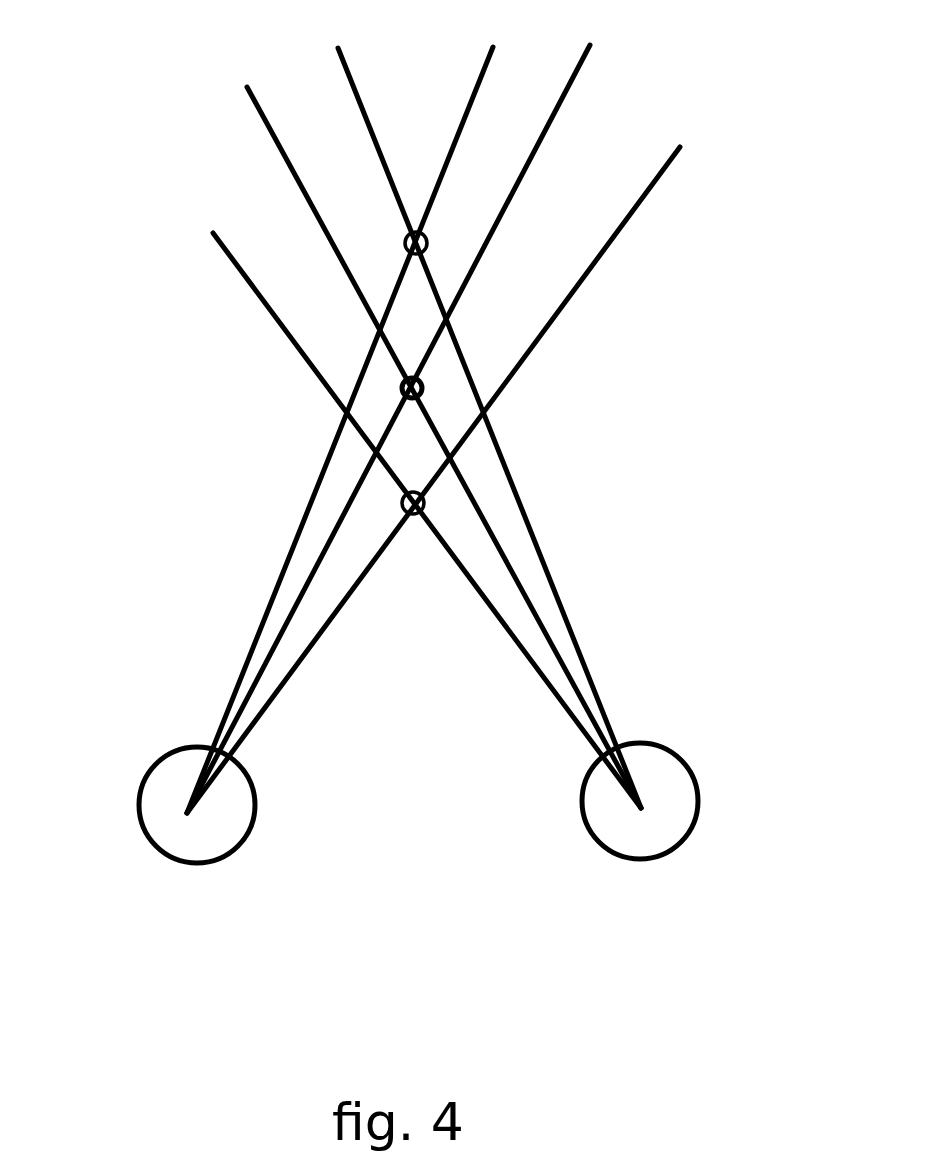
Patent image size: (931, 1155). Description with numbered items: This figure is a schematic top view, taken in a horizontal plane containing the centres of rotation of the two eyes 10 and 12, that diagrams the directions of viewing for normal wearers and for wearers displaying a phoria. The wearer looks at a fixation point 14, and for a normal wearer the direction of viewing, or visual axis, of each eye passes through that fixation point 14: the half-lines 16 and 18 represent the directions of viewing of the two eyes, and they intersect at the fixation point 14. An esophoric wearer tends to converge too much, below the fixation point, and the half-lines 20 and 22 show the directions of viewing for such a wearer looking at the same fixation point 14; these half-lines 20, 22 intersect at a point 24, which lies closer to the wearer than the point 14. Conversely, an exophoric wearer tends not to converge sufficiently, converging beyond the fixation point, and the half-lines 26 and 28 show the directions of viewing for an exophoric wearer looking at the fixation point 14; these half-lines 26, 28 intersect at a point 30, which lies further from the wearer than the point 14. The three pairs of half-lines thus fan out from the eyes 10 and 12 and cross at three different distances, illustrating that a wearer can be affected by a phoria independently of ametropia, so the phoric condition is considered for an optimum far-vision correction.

The eye 10 is at (168, 858).
The eye 12 is at (628, 868).
The fixation point 14 is at (424, 392).
The half-line 16 is at (277, 143).
The half-line 18 is at (564, 96).
The half-line 20 is at (259, 298).
The half-line 22 is at (659, 178).
The point 24 is at (413, 516).
The half-line 26 is at (351, 84).
The half-line 28 is at (496, 48).
The point 30 is at (428, 250).